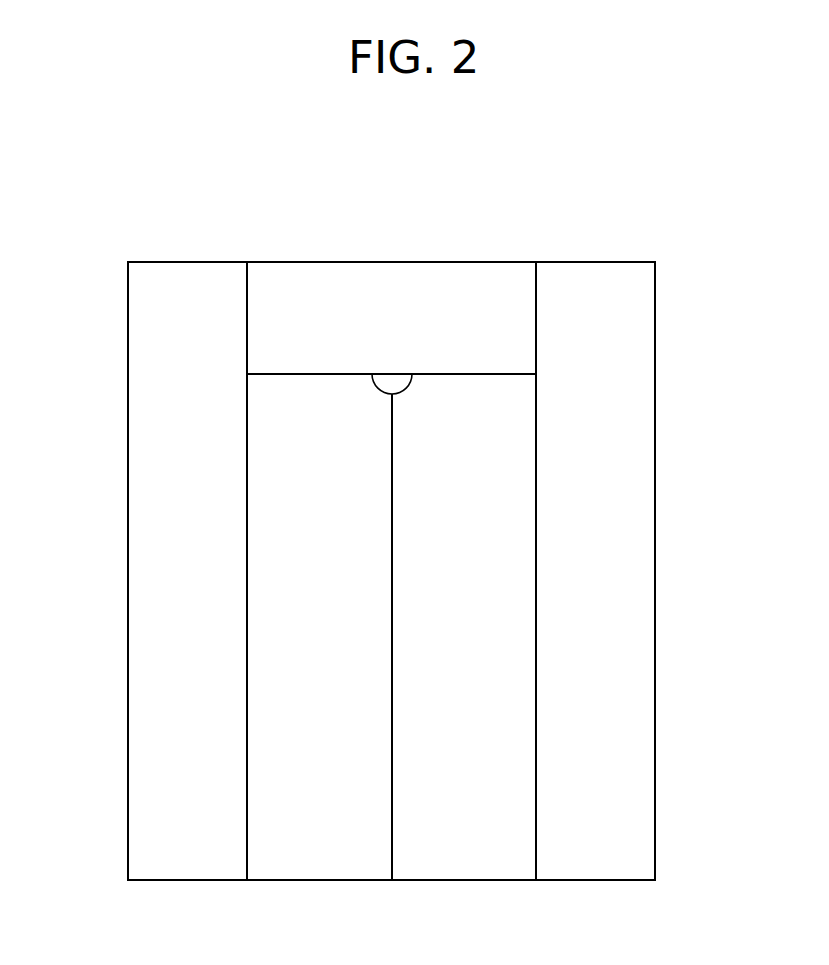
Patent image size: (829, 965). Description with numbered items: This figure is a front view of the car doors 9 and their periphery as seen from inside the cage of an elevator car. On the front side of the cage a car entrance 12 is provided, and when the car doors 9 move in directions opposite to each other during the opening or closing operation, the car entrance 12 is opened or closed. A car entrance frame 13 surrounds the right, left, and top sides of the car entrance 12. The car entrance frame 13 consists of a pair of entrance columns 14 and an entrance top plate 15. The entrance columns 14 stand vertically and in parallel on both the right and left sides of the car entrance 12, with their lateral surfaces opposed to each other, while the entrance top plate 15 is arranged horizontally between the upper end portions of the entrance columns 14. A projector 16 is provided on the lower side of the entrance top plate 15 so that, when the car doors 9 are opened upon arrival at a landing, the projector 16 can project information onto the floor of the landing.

The car doors 9 is at (321, 855).
The car entrance 12 is at (246, 643).
The car entrance frame 13 is at (655, 514).
The entrance columns 14 is at (163, 722).
The entrance top plate 15 is at (331, 290).
The projector 16 is at (404, 390).